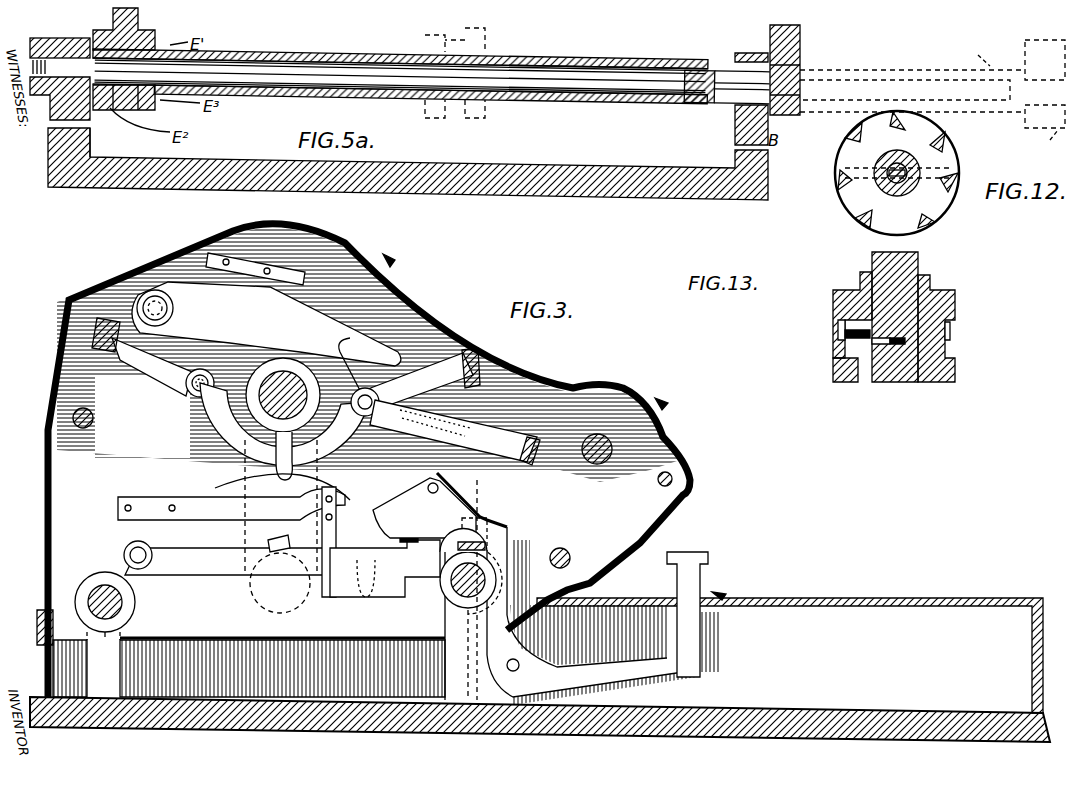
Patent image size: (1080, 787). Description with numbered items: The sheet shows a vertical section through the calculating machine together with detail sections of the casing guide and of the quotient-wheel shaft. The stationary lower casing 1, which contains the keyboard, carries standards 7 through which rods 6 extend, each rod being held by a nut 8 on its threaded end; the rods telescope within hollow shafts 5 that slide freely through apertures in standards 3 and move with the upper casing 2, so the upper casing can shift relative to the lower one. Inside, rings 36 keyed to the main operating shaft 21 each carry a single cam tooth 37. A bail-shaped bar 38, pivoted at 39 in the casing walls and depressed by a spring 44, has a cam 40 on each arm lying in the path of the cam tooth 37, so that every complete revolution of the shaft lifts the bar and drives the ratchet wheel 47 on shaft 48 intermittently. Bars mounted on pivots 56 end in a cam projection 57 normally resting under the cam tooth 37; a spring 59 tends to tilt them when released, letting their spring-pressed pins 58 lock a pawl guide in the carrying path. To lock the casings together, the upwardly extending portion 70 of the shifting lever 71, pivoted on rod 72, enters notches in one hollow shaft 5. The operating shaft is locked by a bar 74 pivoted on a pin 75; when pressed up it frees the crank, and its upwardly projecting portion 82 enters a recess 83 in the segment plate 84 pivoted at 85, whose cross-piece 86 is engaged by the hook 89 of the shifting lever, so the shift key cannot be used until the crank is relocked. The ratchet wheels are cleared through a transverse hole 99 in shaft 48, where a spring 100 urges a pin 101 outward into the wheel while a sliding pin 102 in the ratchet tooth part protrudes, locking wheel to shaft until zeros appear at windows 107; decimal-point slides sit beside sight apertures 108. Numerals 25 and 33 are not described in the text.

In FIG. 5a, the lower casing 1 is at (565, 198).
In FIG. 3, the lower casing 1 is at (386, 732).
In FIG. 5a, the upper casing 2 is at (138, 15).
In FIG. 3, the upper casing 2 is at (43, 462).
In FIG. 5a, the standard 3 is at (735, 128).
In FIG. 3, the standard 3 is at (110, 673).
In FIG. 5a, the hollow shaft 5 is at (528, 102).
In FIG. 3, the hollow shaft 5 is at (125, 602).
In FIG. 5a, the rod 6 is at (415, 96).
In FIG. 3, the rod 6 is at (78, 590).
In FIG. 5a, the standard 7 is at (60, 160).
In FIG. 5a, the nut 8 is at (44, 40).
In FIG. 3, the shaft 21 is at (245, 370).
In FIG. 3, the stop pin 25 is at (95, 418).
In FIG. 3, the clip 33 is at (365, 243).
In FIG. 3, the ring 36 is at (310, 418).
In FIG. 3, the cam tooth 37 is at (276, 440).
In FIG. 3, the bail-shaped bar 38 is at (485, 420).
In FIG. 3, the pivot 39 is at (150, 300).
In FIG. 3, the cam 40 is at (305, 265).
In FIG. 3, the spring 44 is at (287, 357).
In FIG. 12, the ratchet wheel 47 is at (845, 180).
In FIG. 13, the ratchet wheel 47 is at (845, 290).
In FIG. 12, the shaft 48 is at (900, 160).
In FIG. 13, the shaft 48 is at (918, 262).
In FIG. 3, the pivot 56 is at (375, 392).
In FIG. 3, the cam projection 57 is at (281, 459).
In FIG. 3, the pin 58 is at (362, 452).
In FIG. 3, the spring 59 is at (195, 497).
In FIG. 3, the upwardly extending portion 70 is at (505, 597).
In FIG. 3, the shifting lever 71 is at (588, 680).
In FIG. 3, the rod 72 is at (512, 672).
In FIG. 3, the bar 74 is at (180, 575).
In FIG. 3, the pin 75 is at (124, 556).
In FIG. 3, the upwardly projecting portion 82 is at (385, 573).
In FIG. 3, the recess 83 is at (410, 533).
In FIG. 3, the segment plate 84 is at (400, 500).
In FIG. 3, the pivot 85 is at (448, 480).
In FIG. 3, the cross-piece 86 is at (490, 535).
In FIG. 3, the hook 89 is at (472, 512).
In FIG. 12, the transverse hole 99 is at (935, 188).
In FIG. 12, the spring 100 is at (920, 172).
In FIG. 13, the spring 100 is at (903, 345).
In FIG. 12, the pin 101 is at (888, 162).
In FIG. 13, the pin 101 is at (882, 345).
In FIG. 13, the pin 102 is at (845, 334).
In FIG. 3, the window 107 is at (645, 392).
In FIG. 3, the sight aperture 108 is at (708, 590).